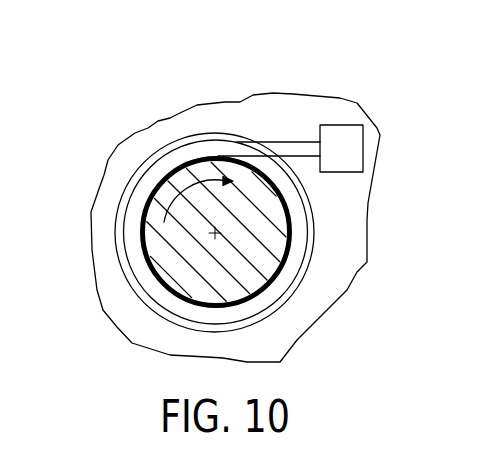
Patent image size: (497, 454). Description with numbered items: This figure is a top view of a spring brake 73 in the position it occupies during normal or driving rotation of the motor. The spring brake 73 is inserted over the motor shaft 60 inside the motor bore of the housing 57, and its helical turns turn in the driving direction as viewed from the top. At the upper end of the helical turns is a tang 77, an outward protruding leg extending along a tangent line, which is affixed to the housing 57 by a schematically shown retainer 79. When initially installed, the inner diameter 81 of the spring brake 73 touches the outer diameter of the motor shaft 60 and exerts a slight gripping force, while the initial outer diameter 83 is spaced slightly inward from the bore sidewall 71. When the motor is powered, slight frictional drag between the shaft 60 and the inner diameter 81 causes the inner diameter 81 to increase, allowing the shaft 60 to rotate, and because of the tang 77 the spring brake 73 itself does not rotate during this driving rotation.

The housing 57 is at (213, 112).
The motor shaft 60 is at (152, 243).
The bore sidewall 71 is at (148, 165).
The spring brake 73 is at (293, 252).
The tang 77 is at (283, 143).
The retainer 79 is at (337, 142).
The inner diameter 81 is at (146, 221).
The outer diameter 83 is at (308, 223).